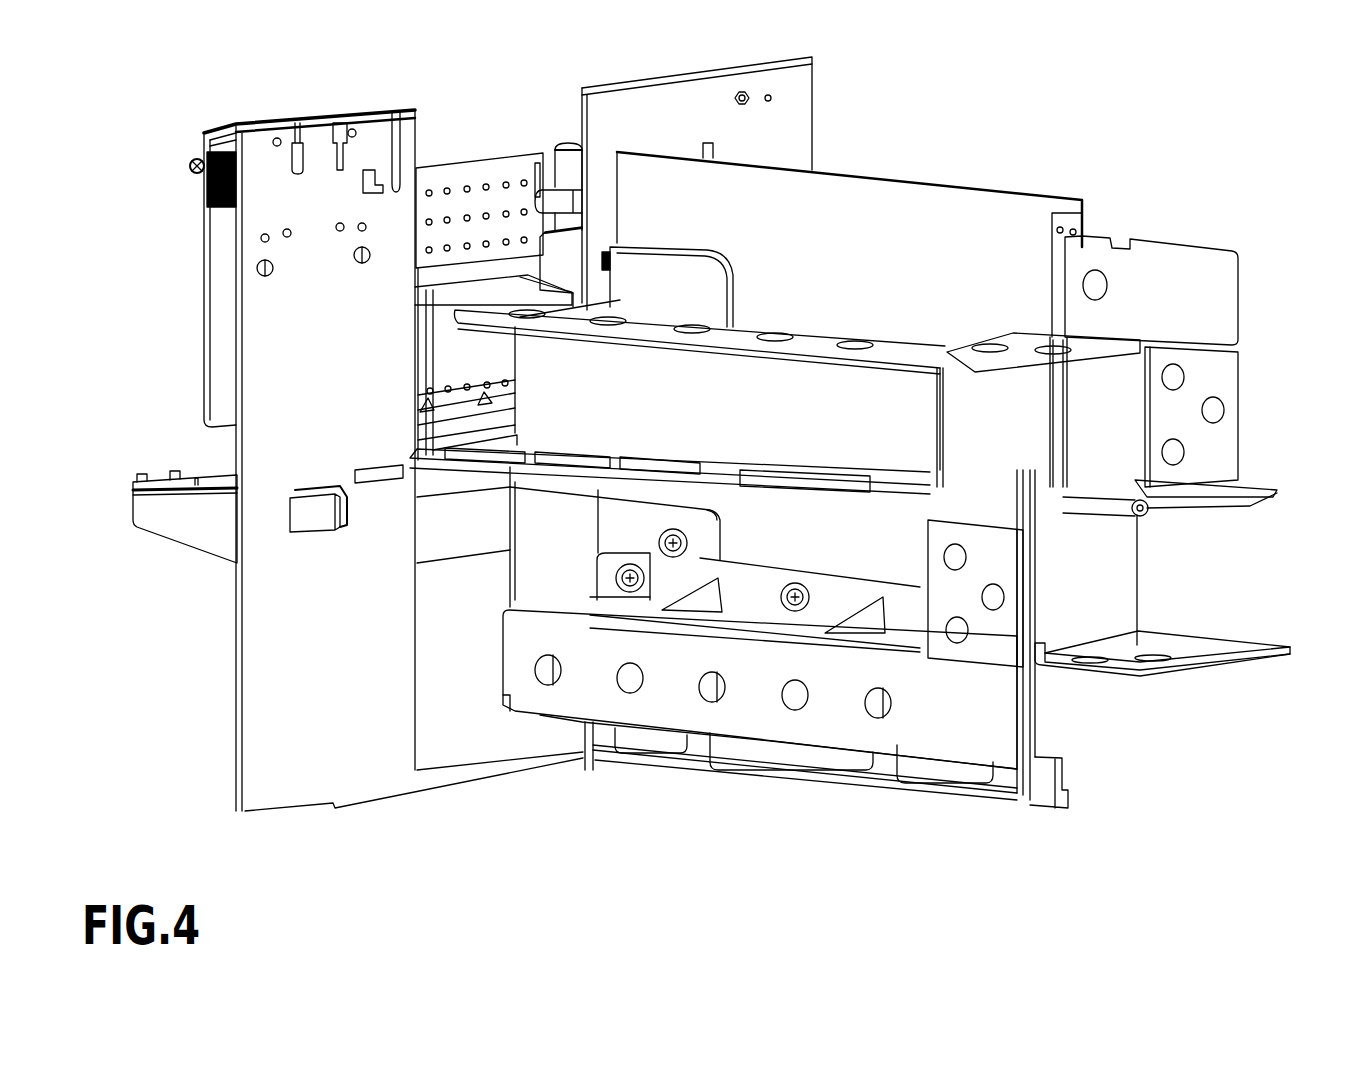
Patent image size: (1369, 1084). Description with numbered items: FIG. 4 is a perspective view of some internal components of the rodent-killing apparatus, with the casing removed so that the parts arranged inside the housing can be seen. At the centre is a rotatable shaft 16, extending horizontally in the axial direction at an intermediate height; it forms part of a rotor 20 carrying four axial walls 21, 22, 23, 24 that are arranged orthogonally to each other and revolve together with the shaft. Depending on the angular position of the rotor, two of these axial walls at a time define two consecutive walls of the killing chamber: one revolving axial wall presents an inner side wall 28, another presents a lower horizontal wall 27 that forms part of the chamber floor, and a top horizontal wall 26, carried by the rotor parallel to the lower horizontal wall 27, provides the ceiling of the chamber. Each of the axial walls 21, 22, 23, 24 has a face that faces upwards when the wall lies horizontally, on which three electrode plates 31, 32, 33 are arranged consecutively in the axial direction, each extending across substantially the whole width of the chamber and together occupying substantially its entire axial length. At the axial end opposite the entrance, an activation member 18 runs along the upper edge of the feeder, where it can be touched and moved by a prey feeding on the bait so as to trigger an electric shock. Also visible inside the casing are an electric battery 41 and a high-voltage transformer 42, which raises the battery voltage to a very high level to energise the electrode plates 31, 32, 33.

The rotatable shaft 16 is at (1110, 503).
The activation member 18 is at (427, 467).
The rotor 20 is at (1152, 688).
The axial wall 21 is at (530, 485).
The axial wall 22 is at (1030, 739).
The axial wall 23 is at (1212, 490).
The axial wall 24 is at (1032, 268).
The top horizontal wall 26 is at (827, 337).
The lower horizontal wall 27 is at (725, 485).
The inner side wall 28 is at (548, 355).
The electrode plate 31 is at (498, 460).
The electrode plate 32 is at (653, 483).
The electrode plate 33 is at (810, 480).
The electric battery 41 is at (227, 307).
The high-voltage transformer 42 is at (563, 140).